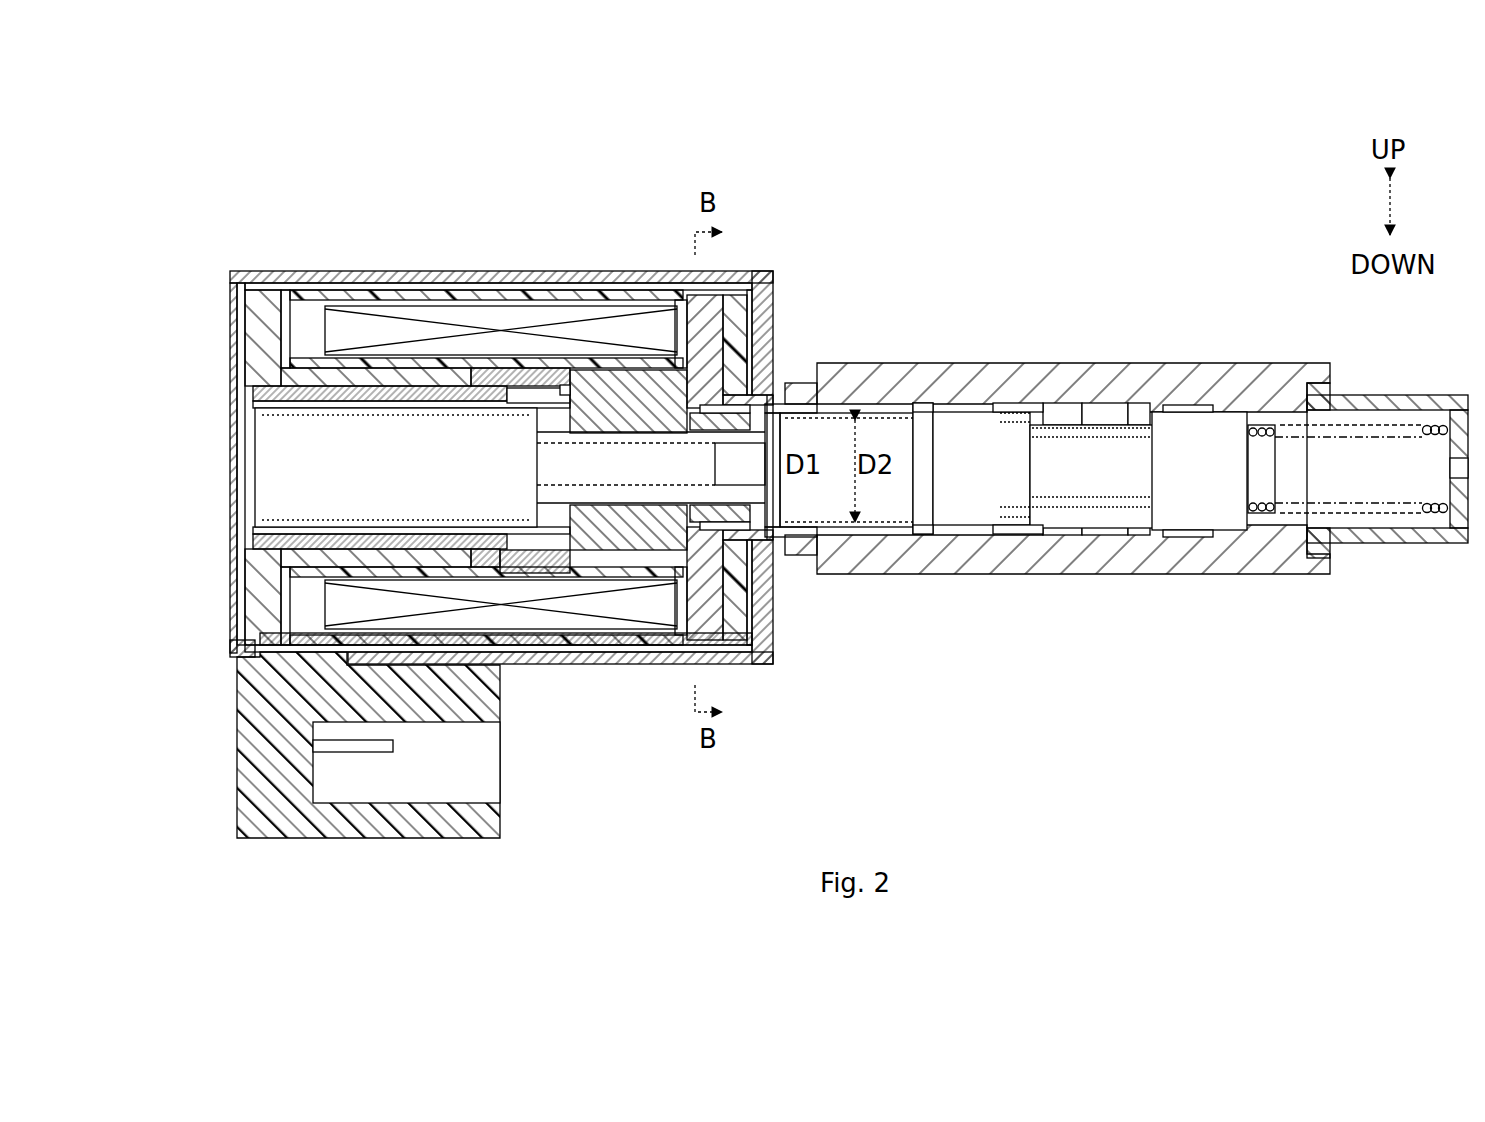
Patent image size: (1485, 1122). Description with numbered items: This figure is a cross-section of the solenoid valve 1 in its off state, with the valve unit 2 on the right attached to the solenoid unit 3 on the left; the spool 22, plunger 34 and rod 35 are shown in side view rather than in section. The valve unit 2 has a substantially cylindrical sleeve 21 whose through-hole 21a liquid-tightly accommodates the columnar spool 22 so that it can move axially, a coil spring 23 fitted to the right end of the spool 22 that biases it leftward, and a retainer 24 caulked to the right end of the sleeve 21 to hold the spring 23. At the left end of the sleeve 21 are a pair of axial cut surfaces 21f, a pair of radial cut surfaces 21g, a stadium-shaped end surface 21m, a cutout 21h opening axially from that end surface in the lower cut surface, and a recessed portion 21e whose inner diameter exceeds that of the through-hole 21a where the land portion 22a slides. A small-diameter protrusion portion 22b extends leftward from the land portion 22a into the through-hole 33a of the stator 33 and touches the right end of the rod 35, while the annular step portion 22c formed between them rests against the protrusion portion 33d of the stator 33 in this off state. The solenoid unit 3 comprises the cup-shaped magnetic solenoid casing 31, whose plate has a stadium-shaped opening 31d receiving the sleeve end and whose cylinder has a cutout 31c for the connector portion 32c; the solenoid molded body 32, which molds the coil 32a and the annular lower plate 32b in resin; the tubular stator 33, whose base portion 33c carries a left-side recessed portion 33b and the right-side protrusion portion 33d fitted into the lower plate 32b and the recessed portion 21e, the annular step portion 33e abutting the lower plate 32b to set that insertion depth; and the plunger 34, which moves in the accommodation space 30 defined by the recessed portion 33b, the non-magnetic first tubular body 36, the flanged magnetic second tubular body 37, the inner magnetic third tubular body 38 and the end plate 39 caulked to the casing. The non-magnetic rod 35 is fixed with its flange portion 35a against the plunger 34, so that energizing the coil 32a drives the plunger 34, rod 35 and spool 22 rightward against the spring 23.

The solenoid valve 1 is at (1016, 200).
The valve unit 2 is at (1228, 322).
The solenoid unit 3 is at (268, 198).
The sleeve 21 is at (1063, 577).
The through-hole 21a is at (1110, 525).
The recessed portion 21e is at (790, 385).
The axial cut surfaces 21f is at (828, 398).
The radial cut surfaces 21g is at (848, 392).
The cutout 21h is at (772, 545).
The end surface 21m is at (752, 455).
The spool 22 is at (1190, 570).
The land portion 22a is at (925, 400).
The protrusion portion 22b is at (790, 400).
The step portion 22c is at (847, 535).
The spring 23 is at (1247, 528).
The retainer 24 is at (1378, 545).
The accommodation space 30 is at (258, 508).
The solenoid casing 31 is at (628, 672).
The cutout 31c is at (415, 655).
The opening 31d is at (778, 560).
The solenoid molded body 32 is at (768, 660).
The coil 32a is at (655, 650).
The lower plate 32b is at (740, 665).
The connector portion 32c is at (262, 745).
The stator 33 is at (700, 300).
The through-hole 33a is at (610, 420).
The recessed portion 33b is at (560, 427).
The base portion 33c is at (655, 415).
The protrusion portion 33d is at (740, 405).
The step portion 33e is at (713, 305).
The plunger 34 is at (268, 457).
The rod 35 is at (457, 378).
The flange portion 35a is at (560, 643).
The first tubular body 36 is at (410, 372).
The second tubular body 37 is at (350, 378).
The third tubular body 38 is at (297, 292).
The end plate 39 is at (240, 355).